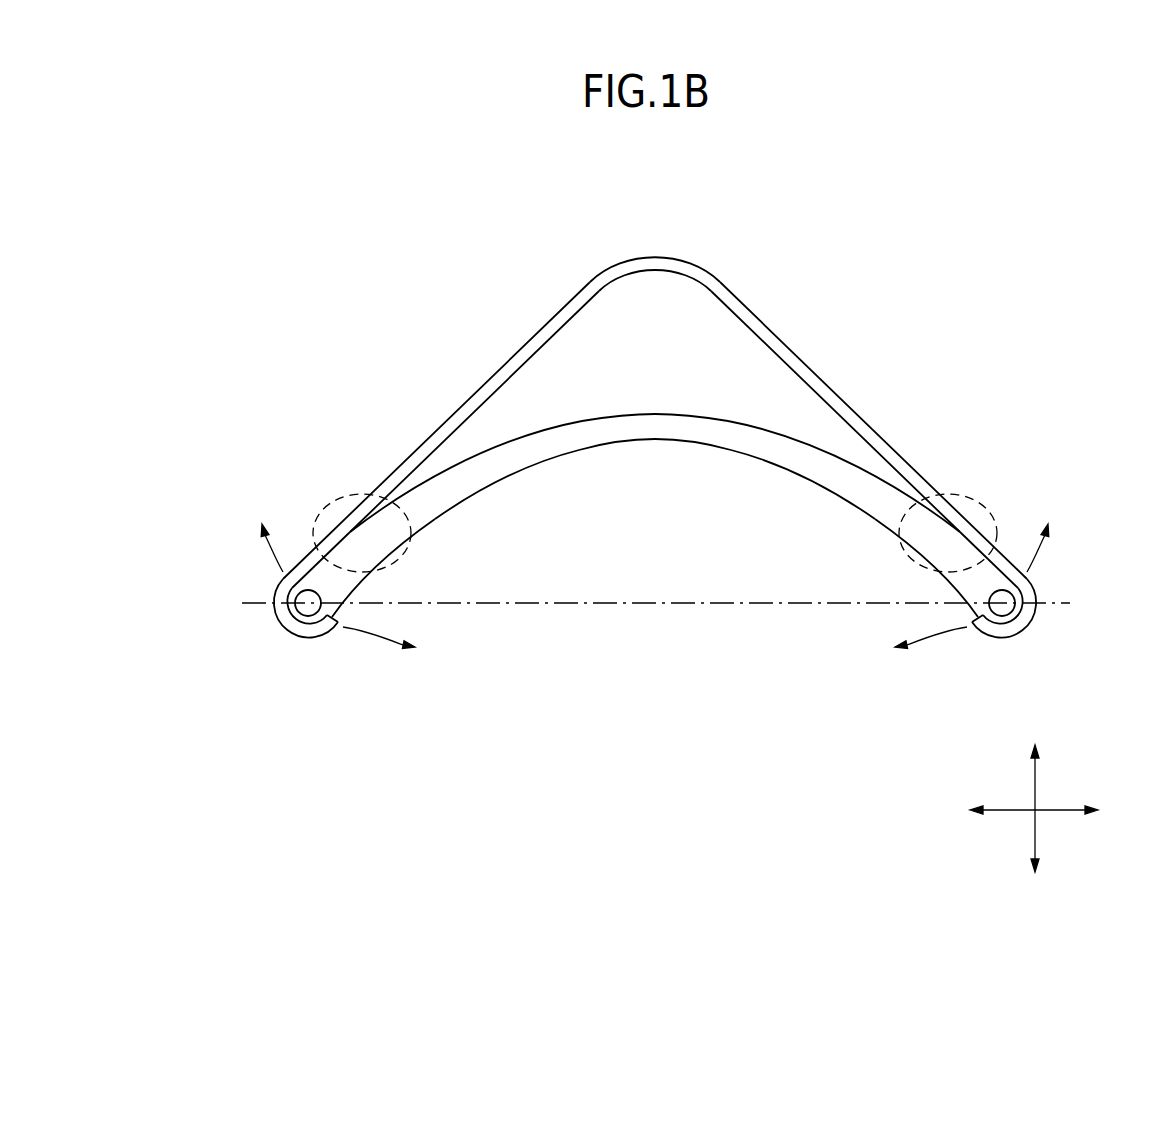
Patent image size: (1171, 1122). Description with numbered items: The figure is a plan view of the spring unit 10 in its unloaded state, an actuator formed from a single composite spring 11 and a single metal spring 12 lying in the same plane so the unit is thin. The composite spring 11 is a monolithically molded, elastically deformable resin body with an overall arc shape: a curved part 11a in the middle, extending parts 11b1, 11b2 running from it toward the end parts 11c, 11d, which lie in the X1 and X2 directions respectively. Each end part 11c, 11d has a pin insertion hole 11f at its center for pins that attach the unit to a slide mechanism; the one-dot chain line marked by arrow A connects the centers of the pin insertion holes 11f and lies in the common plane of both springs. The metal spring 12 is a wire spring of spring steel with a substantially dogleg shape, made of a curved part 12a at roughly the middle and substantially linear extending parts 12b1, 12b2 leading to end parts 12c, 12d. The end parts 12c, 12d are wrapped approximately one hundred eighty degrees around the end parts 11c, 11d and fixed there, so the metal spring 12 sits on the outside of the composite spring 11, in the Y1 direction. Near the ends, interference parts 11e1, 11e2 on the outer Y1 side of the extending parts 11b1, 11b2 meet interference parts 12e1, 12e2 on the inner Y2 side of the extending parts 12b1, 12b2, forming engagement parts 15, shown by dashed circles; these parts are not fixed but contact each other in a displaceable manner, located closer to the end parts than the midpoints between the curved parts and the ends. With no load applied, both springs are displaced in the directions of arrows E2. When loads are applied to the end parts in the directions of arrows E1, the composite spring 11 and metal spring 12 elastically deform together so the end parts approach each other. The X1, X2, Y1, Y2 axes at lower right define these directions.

The spring unit 10 is at (868, 199).
The composite spring 11 is at (775, 410).
The curved part 11a is at (656, 434).
The extending part 11b1 is at (423, 498).
The extending part 11b2 is at (887, 498).
The end part 11c is at (288, 598).
The end part 11d is at (1022, 594).
The interference part 11e1 is at (407, 541).
The interference part 11e2 is at (943, 533).
The pin insertion hole 11f is at (308, 612).
The metal spring 12 is at (775, 312).
The curved part 12a is at (656, 256).
The extending part 12b1 is at (460, 417).
The extending part 12b2 is at (863, 418).
The end part 12c is at (289, 626).
The end part 12d is at (1021, 628).
The interference part 12e1 is at (350, 530).
The interference part 12e2 is at (960, 530).
The engagement part 15 is at (334, 485).
The one-dot chain line A is at (655, 615).
The load direction arrows E1 is at (655, 644).
The unloaded displacement arrows E2 is at (656, 533).
The X1 direction X1 is at (987, 810).
The X2 direction X2 is at (1083, 810).
The Y1 direction Y1 is at (1035, 766).
The Y2 direction Y2 is at (1035, 856).